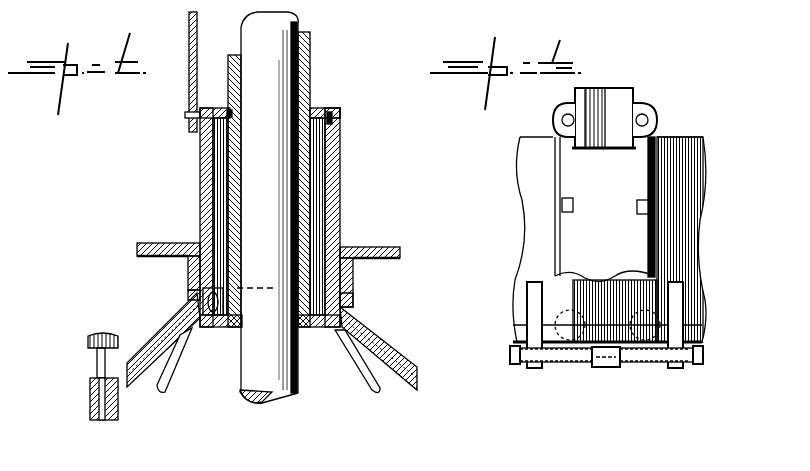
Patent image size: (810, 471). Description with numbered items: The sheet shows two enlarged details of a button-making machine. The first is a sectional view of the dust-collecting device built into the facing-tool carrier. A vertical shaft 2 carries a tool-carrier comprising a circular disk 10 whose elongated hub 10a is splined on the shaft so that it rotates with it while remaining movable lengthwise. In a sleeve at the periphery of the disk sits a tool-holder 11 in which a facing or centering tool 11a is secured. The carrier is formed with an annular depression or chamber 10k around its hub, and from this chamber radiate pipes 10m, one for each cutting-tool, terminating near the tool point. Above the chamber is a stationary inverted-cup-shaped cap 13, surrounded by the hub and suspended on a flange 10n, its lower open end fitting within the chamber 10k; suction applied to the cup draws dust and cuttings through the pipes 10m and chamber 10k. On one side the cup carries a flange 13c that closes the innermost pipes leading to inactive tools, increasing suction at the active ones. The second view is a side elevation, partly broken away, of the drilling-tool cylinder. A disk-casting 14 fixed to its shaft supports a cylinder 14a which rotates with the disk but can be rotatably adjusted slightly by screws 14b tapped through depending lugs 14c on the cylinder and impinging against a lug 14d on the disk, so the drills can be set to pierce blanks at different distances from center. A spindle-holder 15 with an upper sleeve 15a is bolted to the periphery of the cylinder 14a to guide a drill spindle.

In FIG. 12, the vertical shaft 2 is at (248, 376).
In FIG. 12, the circular disk 10 is at (380, 247).
In FIG. 12, the elongated hub 10a is at (312, 166).
In FIG. 12, the flange 10n is at (329, 118).
In FIG. 12, the radiating pipes 10m is at (403, 328).
In FIG. 12, the annular chamber 10k is at (323, 330).
In FIG. 12, the tool-holder 11 is at (88, 340).
In FIG. 12, the facing or centering tool 11a is at (97, 364).
In FIG. 12, the inverted-cup-shaped cap 13 is at (341, 128).
In FIG. 12, the flange 13c is at (341, 302).
In FIG. 13, the disk-casting 14 is at (703, 336).
In FIG. 13, the cylinder 14a is at (700, 206).
In FIG. 13, the screws 14b is at (661, 376).
In FIG. 13, the depending lugs 14c is at (719, 305).
In FIG. 13, the lug 14d is at (612, 367).
In FIG. 13, the spindle-holders 15 is at (605, 209).
In FIG. 13, the upper sleeve 15a is at (632, 110).